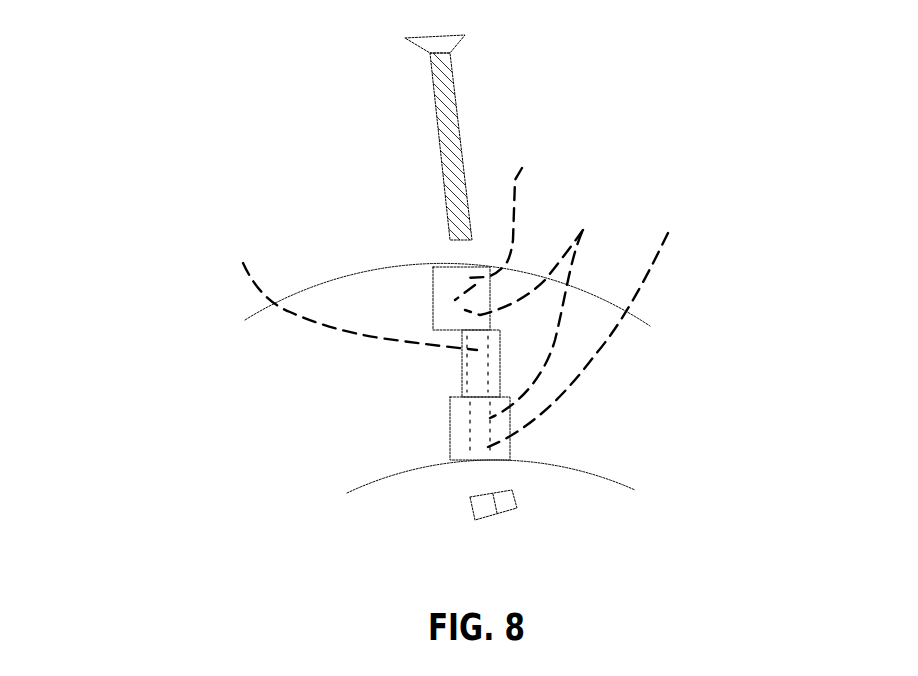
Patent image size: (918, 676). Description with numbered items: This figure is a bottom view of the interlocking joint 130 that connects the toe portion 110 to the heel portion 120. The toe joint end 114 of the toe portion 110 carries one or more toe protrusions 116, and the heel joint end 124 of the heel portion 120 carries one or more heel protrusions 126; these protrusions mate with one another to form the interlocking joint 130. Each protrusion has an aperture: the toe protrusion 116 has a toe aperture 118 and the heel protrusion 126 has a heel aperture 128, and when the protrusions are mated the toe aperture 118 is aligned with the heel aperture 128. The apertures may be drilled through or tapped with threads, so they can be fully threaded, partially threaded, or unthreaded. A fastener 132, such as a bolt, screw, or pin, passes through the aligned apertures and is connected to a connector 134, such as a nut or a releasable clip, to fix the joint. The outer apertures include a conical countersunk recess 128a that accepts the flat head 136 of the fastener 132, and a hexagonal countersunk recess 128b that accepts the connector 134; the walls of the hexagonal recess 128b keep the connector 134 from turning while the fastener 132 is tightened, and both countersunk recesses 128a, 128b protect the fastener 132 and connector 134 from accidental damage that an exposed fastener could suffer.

The toe portion 110 is at (185, 347).
The toe joint end 114 is at (358, 382).
The toe protrusion 116 is at (453, 372).
The toe aperture 118 is at (340, 297).
The heel portion 120 is at (713, 344).
The heel joint end 124 is at (610, 402).
The heel protrusion 126 is at (445, 313).
The heel aperture 128 is at (534, 306).
The conical countersunk recess 128a is at (511, 222).
The hexagonal countersunk recess 128b is at (590, 324).
The interlocking joint 130 is at (655, 137).
The fastener 132 is at (447, 107).
The connector 134 is at (507, 503).
The flat head 136 is at (436, 48).